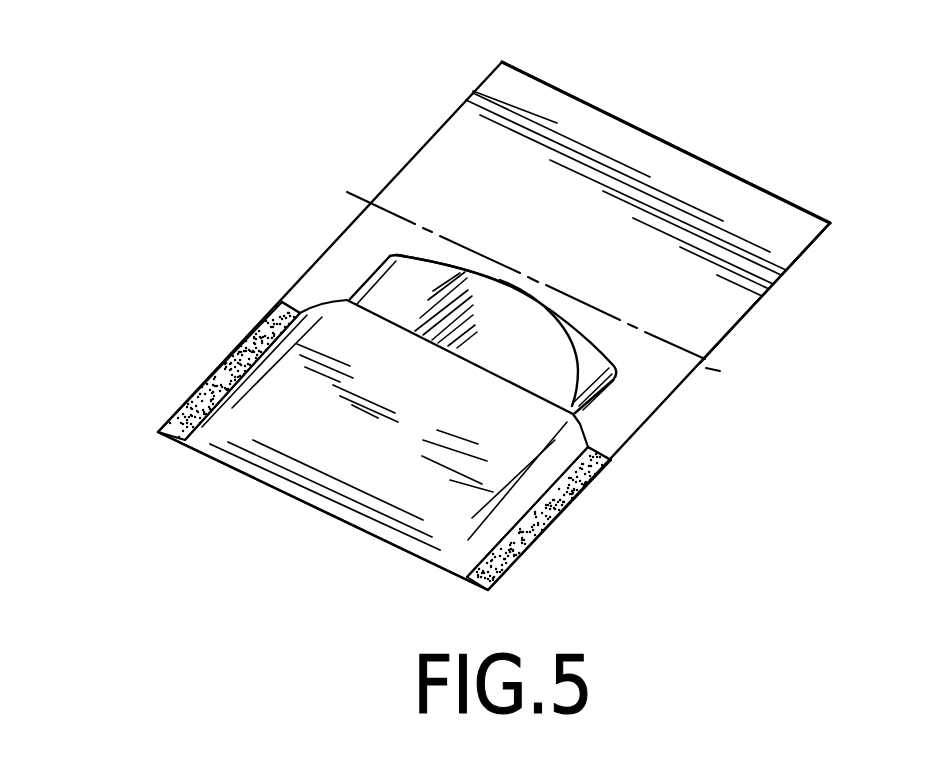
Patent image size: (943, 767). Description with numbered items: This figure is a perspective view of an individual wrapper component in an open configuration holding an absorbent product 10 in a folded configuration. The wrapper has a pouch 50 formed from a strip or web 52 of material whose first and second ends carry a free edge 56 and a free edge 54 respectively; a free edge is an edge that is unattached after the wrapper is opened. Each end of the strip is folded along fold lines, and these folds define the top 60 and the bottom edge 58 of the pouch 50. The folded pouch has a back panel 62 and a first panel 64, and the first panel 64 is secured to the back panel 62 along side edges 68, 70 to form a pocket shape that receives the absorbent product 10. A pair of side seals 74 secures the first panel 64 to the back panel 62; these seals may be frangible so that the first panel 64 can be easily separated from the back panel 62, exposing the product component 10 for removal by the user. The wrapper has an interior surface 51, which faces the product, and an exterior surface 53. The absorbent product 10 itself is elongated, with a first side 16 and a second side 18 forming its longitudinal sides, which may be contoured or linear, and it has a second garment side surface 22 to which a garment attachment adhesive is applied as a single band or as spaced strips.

The absorbent product 10 is at (463, 258).
The first side 16 is at (652, 423).
The second side 18 is at (488, 279).
The second garment side surface 22 is at (545, 333).
The pouch 50 is at (454, 509).
The interior surface 51 is at (804, 254).
The strip or web 52 is at (753, 306).
The exterior surface 53 is at (210, 443).
The free edge of second end 54 is at (620, 118).
The free edge of first end 56 is at (453, 355).
The bottom edge 58 is at (261, 480).
The top 60 is at (706, 368).
The back panel 62 is at (372, 240).
The first panel 64 is at (432, 440).
The side edge 68 is at (581, 492).
The side edge 70 is at (250, 327).
The side seals 74 is at (228, 368).